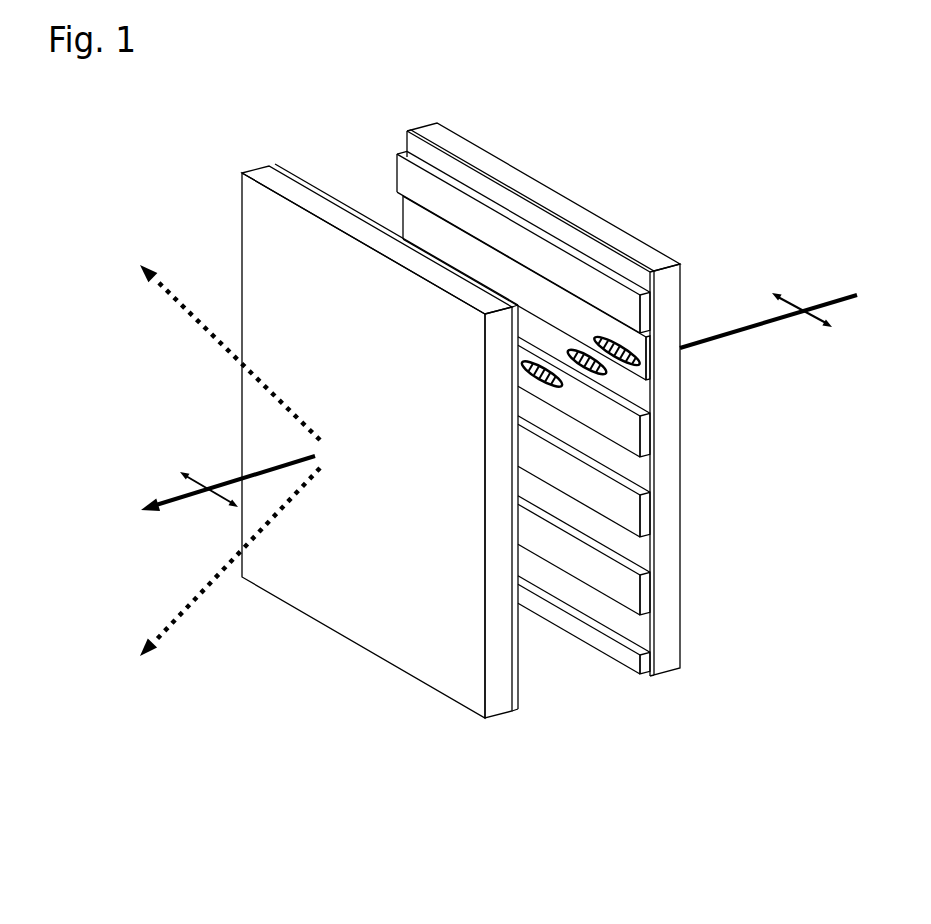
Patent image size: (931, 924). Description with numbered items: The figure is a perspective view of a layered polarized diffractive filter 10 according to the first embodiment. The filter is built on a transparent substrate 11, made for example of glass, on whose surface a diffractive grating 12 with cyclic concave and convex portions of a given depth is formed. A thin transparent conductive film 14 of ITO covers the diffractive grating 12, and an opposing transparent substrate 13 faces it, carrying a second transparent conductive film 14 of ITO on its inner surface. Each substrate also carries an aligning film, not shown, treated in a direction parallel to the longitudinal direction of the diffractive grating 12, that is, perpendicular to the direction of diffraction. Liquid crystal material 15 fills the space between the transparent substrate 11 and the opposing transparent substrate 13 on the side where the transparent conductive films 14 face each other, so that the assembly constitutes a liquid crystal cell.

The layered polarized diffractive filter 10 is at (588, 460).
The transparent substrate 11 is at (670, 633).
The diffractive grating 12 is at (690, 483).
The opposing transparent substrate 13 is at (463, 687).
The transparent conductive film 14 is at (283, 172).
The liquid crystal material 15 is at (613, 375).